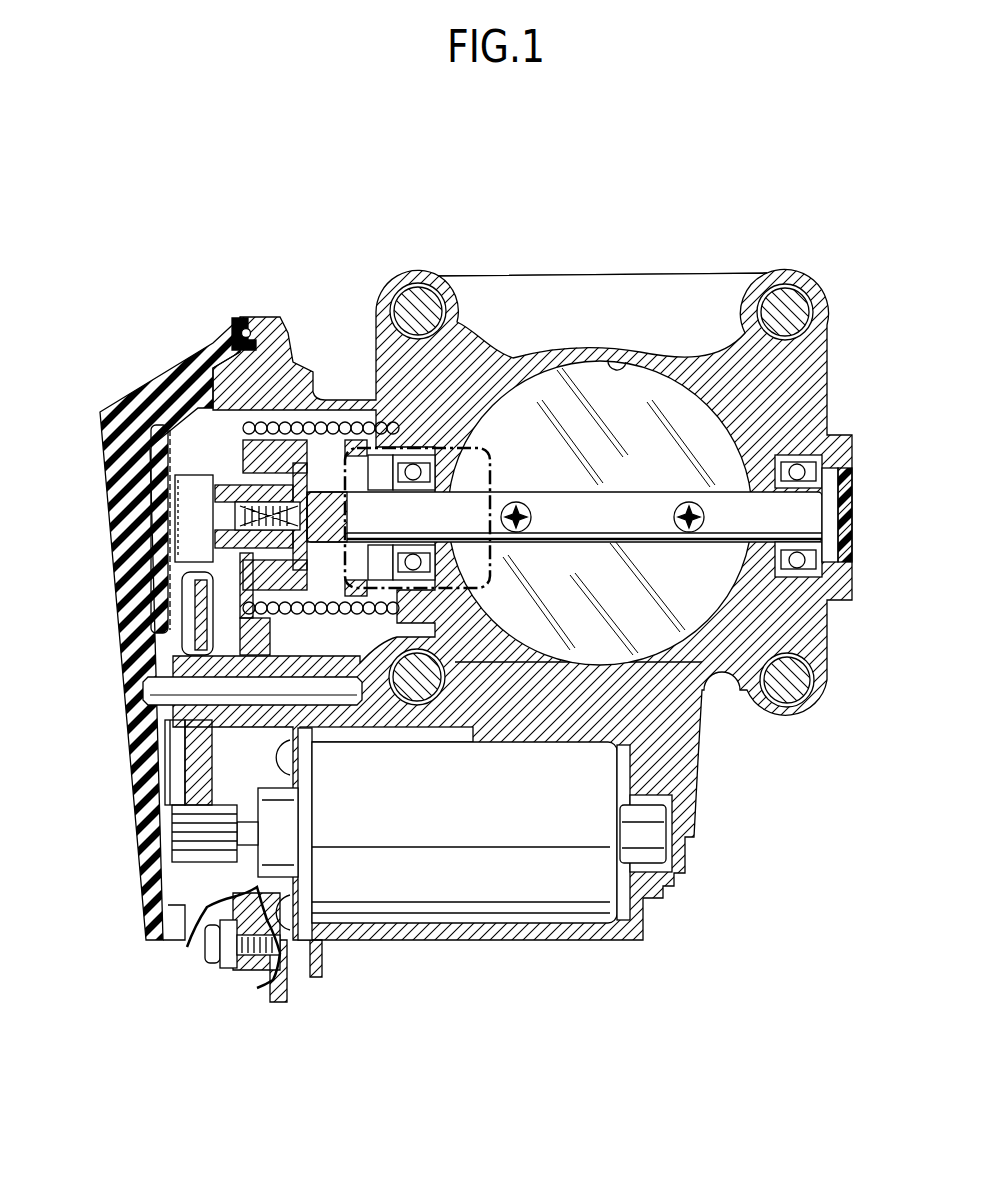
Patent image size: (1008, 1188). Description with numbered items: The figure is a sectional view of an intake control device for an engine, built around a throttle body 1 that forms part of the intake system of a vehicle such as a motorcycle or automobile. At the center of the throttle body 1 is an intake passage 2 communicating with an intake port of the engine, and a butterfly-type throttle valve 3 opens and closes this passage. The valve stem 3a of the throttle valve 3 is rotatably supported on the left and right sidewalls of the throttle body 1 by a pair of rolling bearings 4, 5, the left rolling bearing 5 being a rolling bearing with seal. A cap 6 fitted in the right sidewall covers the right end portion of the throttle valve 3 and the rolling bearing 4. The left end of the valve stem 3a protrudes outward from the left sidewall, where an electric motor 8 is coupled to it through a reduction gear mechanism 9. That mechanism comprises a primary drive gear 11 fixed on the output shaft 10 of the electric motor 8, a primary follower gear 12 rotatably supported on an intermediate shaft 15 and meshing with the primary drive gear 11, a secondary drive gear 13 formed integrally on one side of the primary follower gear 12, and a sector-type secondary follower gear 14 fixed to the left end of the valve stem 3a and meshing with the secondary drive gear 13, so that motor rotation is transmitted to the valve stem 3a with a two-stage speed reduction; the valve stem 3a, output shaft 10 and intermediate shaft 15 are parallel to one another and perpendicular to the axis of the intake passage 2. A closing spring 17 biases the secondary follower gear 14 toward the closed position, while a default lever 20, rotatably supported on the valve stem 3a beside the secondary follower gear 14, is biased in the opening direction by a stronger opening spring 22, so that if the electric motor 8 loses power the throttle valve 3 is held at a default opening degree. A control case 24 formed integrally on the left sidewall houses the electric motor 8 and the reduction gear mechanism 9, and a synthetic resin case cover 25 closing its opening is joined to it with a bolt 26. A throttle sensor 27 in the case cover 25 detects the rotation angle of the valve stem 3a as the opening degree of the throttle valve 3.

The throttle body 1 is at (792, 399).
The intake passage 2 is at (626, 366).
The throttle valve 3 is at (597, 470).
The valve stem 3a is at (590, 527).
The rolling bearing 4 is at (798, 468).
The rolling bearing 5 is at (457, 473).
The cap 6 is at (842, 506).
The electric motor 8 is at (457, 820).
The reduction gear mechanism 9 is at (196, 773).
The output shaft 10 is at (250, 818).
The primary drive gear 11 is at (216, 840).
The primary follower gear 12 is at (207, 758).
The secondary drive gear 13 is at (292, 655).
The secondary follower gear 14 is at (260, 641).
The intermediate shaft 15 is at (320, 692).
The closing spring 17 is at (270, 426).
The default lever 20 is at (327, 420).
The opening spring 22 is at (368, 432).
The control case 24 is at (264, 316).
The case cover 25 is at (118, 470).
The bolt 26 is at (205, 950).
The throttle sensor 27 is at (176, 525).